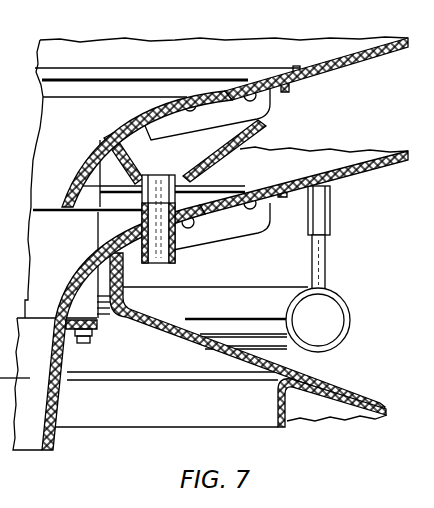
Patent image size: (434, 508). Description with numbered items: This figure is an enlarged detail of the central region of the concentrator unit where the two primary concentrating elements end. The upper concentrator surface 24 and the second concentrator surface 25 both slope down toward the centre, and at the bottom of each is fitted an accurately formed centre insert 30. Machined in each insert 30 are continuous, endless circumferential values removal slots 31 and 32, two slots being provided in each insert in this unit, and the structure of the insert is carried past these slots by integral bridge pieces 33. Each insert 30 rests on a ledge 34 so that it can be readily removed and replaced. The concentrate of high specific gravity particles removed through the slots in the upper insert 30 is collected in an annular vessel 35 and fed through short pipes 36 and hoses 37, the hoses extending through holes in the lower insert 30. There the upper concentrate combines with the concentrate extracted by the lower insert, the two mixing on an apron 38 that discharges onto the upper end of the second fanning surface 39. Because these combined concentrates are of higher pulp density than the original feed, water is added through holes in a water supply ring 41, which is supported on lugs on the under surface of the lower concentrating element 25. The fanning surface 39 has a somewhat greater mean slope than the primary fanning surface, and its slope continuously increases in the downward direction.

The concentrator surface 24 is at (349, 50).
The second concentrator surface 25 is at (356, 160).
The centre insert 30 is at (108, 126).
The values removal slot 31 is at (215, 80).
The values removal slot 32 is at (148, 97).
The bridge piece 33 is at (227, 121).
The ledge 34 is at (285, 91).
The annular vessel 35 is at (170, 167).
The short pipe 36 is at (80, 186).
The hose 37 is at (165, 256).
The apron 38 is at (172, 318).
The second fanning surface 39 is at (383, 405).
The water supply ring 41 is at (318, 269).